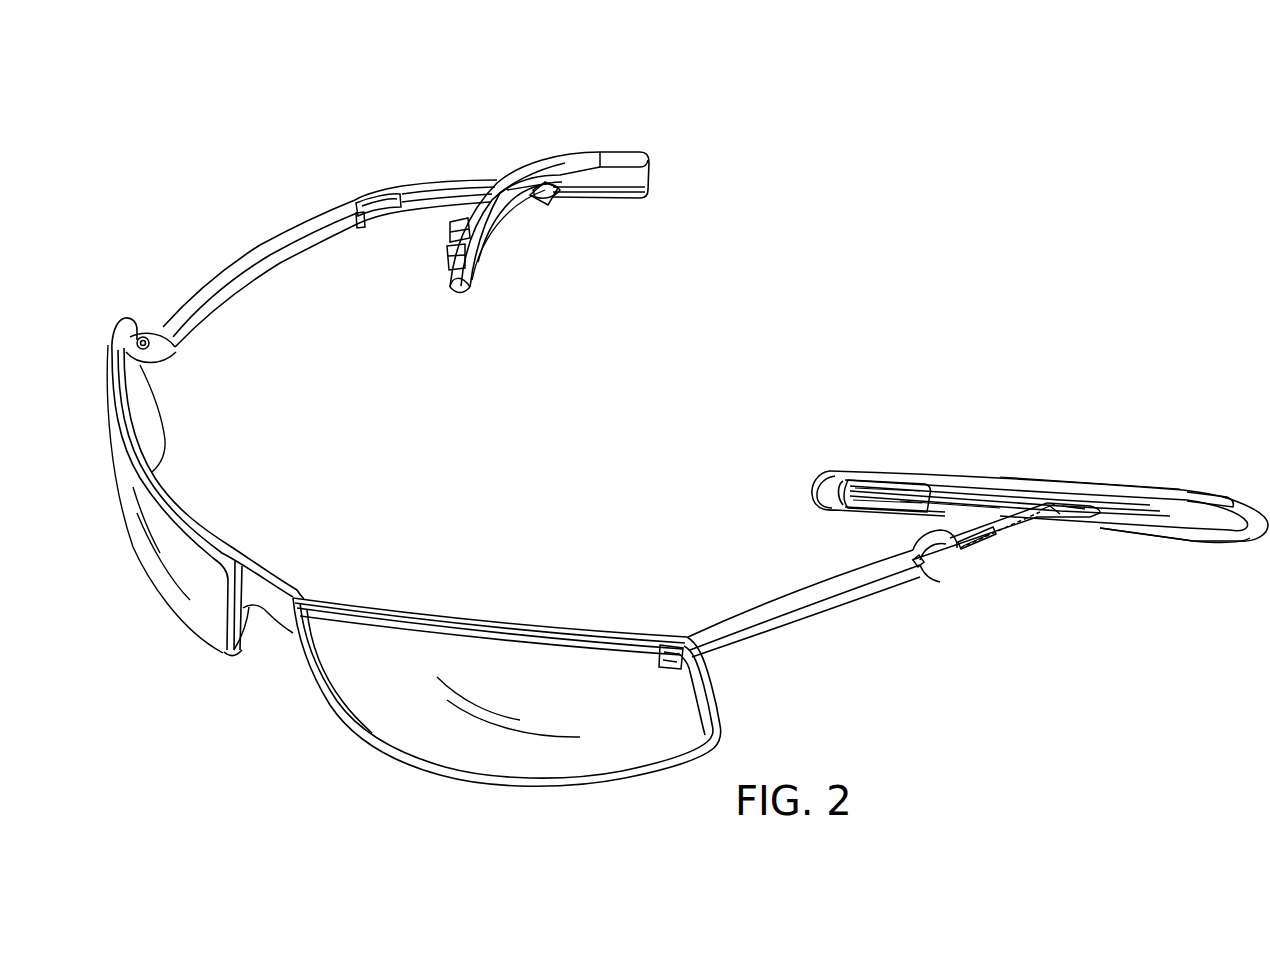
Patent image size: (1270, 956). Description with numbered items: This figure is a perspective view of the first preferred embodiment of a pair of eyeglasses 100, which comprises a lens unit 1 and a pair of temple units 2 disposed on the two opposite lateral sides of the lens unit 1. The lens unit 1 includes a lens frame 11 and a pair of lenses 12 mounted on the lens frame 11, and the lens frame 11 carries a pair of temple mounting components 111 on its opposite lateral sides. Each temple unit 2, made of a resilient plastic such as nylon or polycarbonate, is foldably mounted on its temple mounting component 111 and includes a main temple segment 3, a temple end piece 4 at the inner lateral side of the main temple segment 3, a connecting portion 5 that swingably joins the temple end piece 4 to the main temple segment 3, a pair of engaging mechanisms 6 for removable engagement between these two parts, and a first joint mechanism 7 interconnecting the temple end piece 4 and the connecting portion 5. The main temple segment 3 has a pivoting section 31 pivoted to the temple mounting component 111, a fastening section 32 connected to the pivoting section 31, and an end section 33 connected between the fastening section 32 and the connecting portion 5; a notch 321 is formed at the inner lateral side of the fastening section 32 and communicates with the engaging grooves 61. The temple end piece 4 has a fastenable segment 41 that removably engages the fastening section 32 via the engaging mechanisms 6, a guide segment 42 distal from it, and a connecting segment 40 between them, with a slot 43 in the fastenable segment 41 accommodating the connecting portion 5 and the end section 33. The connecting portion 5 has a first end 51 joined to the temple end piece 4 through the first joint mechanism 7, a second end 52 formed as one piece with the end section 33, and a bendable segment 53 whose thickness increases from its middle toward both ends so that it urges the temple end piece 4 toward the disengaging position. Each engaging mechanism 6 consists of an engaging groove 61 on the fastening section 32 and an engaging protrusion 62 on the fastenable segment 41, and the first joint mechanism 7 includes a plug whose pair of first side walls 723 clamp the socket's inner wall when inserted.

The pair of eyeglasses 100 is at (752, 278).
The lens unit 1 is at (237, 710).
The lens frame 11 is at (267, 598).
The temple mounting component 111 is at (144, 333).
The lens 12 is at (176, 558).
The temple unit 2 is at (656, 167).
The main temple segment 3 is at (797, 622).
The pivoting section 31 is at (250, 257).
The fastening section 32 is at (373, 195).
The notch 321 is at (360, 224).
The end section 33 is at (449, 196).
The temple end piece 4 is at (1131, 478).
The connecting segment 40 is at (1068, 483).
The fastenable segment 41 is at (462, 292).
The guide segment 42 is at (638, 178).
The slot 43 is at (497, 218).
The connecting portion 5 is at (1166, 618).
The first end 51 is at (532, 204).
The second end 52 is at (1035, 512).
The bendable segment 53 is at (1052, 508).
The engaging mechanism 6 is at (352, 200).
The engaging groove 61 is at (945, 544).
The engaging protrusion 62 is at (858, 504).
The first joint mechanism 7 is at (550, 186).
The first side wall 723 is at (1150, 534).